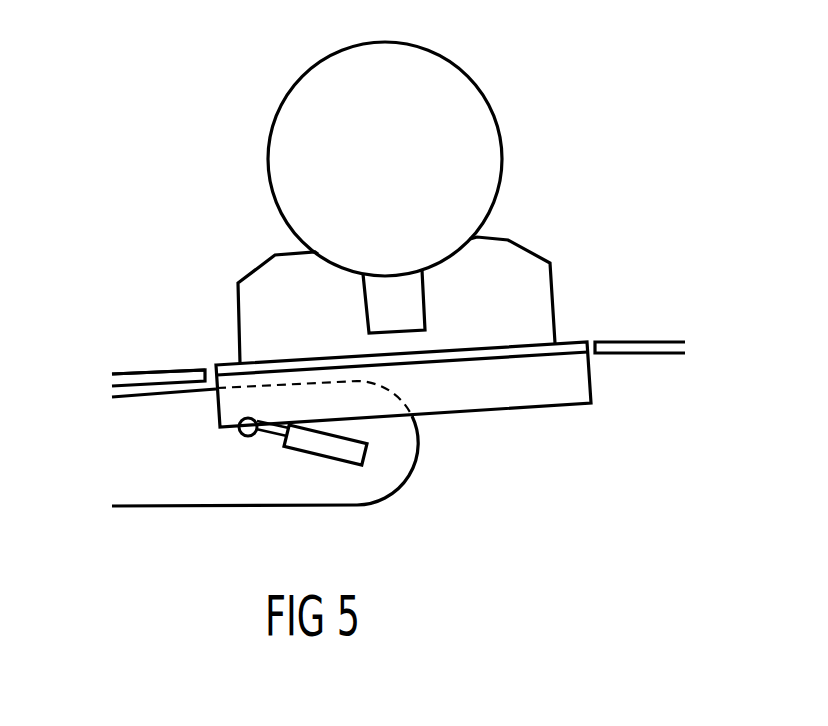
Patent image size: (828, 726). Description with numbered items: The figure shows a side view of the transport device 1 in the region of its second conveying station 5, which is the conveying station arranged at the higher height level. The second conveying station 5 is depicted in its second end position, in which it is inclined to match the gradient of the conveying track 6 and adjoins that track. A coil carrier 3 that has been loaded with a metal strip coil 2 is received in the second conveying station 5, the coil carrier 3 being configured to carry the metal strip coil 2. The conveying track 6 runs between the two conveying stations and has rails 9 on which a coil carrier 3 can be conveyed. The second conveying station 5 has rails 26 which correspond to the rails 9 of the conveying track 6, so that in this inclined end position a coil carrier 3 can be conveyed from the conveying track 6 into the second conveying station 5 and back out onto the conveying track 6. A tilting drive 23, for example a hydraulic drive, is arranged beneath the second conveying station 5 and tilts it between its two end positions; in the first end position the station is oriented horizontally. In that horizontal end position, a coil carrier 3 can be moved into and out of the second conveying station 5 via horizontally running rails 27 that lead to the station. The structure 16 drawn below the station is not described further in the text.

The transport device 1 is at (221, 86).
The metal strip coil 2 is at (478, 122).
The coil carrier 3 is at (530, 249).
The second conveying station 5 is at (439, 349).
The conveying track 6 is at (109, 356).
The rails 9 is at (162, 373).
The lever 16 is at (419, 445).
The tilting drive 23 is at (358, 456).
The rails 26 is at (237, 370).
The horizontally running rails 27 is at (637, 343).